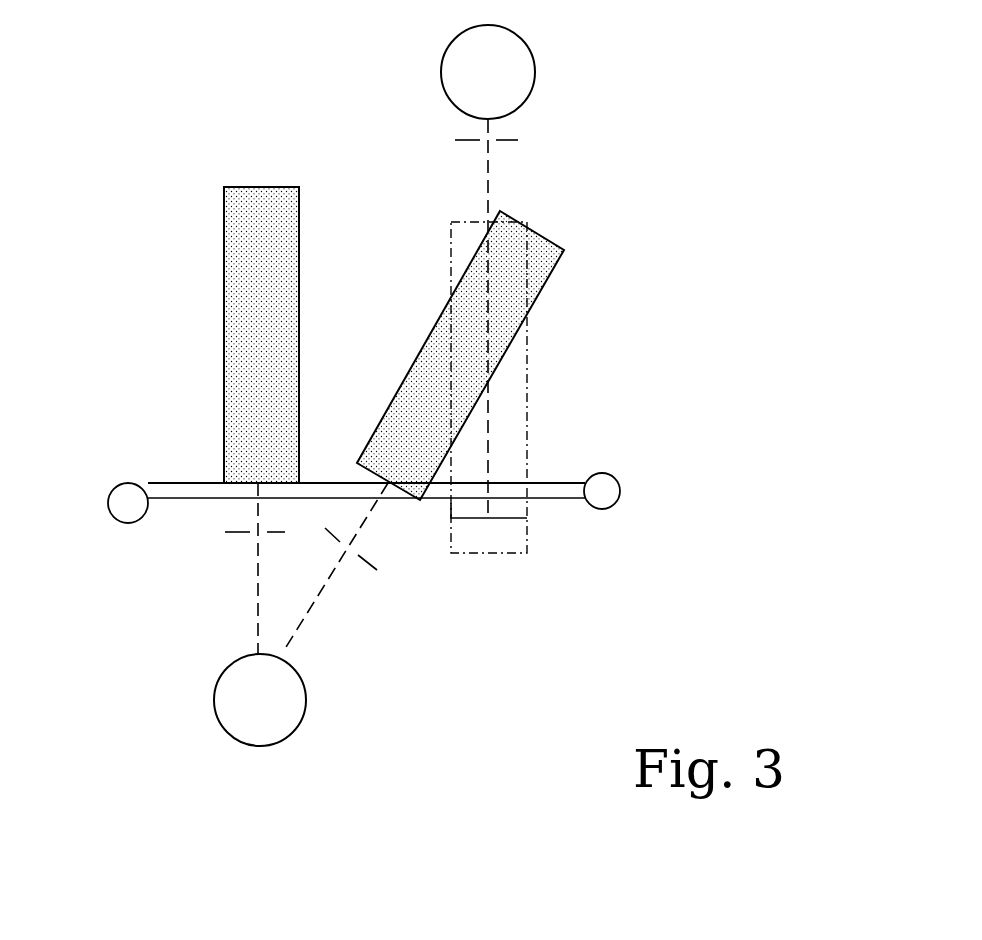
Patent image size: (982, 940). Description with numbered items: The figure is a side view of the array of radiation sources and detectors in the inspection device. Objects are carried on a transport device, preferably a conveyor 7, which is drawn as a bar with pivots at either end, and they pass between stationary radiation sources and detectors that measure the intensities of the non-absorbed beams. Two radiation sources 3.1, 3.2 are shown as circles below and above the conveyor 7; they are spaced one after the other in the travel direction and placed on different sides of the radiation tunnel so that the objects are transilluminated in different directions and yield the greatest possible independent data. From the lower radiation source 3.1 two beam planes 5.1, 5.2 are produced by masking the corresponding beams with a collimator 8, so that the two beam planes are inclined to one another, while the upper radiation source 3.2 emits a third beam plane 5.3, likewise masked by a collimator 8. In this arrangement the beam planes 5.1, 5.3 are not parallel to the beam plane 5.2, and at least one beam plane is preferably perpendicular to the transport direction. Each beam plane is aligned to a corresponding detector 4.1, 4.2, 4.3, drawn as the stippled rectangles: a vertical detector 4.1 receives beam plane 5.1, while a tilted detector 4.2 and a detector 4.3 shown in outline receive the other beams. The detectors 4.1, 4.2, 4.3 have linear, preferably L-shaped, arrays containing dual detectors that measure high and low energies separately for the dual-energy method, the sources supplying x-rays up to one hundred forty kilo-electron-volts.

The radiation source 3.1 is at (283, 723).
The radiation source 3.2 is at (527, 67).
The detector 4.1 is at (235, 343).
The detector 4.2 is at (550, 272).
The detector 4.3 is at (518, 435).
The beam plane 5.1 is at (257, 619).
The beam plane 5.2 is at (307, 620).
The beam plane 5.3 is at (487, 178).
The conveyor 7 is at (125, 508).
The collimator 8 is at (518, 140).